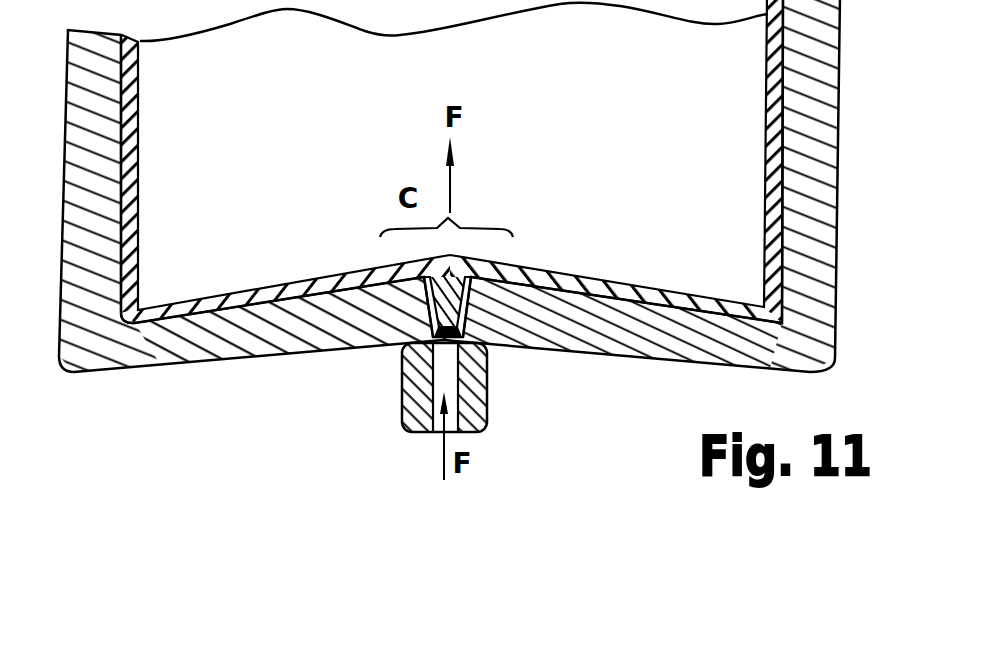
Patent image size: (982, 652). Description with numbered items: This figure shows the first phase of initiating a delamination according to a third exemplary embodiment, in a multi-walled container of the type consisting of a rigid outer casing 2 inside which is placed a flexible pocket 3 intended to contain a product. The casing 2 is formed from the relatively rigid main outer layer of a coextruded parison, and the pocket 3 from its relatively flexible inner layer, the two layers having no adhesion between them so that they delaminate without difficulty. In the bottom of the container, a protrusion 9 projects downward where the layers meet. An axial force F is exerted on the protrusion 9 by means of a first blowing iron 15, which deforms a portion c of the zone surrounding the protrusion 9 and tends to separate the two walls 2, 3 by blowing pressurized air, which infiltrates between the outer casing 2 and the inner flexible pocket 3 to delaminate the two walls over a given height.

The rigid outer casing 2 is at (815, 158).
The flexible pocket 3 is at (775, 150).
The protrusion 9 is at (417, 283).
The first blowing iron 15 is at (490, 392).